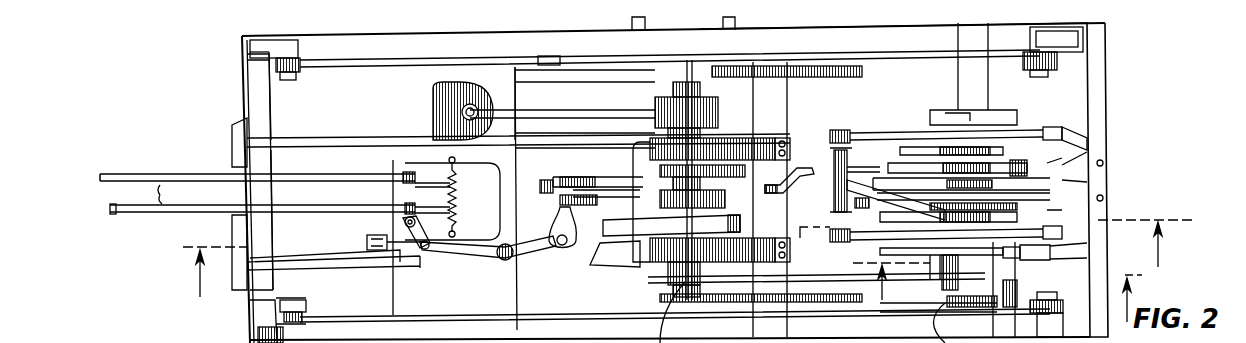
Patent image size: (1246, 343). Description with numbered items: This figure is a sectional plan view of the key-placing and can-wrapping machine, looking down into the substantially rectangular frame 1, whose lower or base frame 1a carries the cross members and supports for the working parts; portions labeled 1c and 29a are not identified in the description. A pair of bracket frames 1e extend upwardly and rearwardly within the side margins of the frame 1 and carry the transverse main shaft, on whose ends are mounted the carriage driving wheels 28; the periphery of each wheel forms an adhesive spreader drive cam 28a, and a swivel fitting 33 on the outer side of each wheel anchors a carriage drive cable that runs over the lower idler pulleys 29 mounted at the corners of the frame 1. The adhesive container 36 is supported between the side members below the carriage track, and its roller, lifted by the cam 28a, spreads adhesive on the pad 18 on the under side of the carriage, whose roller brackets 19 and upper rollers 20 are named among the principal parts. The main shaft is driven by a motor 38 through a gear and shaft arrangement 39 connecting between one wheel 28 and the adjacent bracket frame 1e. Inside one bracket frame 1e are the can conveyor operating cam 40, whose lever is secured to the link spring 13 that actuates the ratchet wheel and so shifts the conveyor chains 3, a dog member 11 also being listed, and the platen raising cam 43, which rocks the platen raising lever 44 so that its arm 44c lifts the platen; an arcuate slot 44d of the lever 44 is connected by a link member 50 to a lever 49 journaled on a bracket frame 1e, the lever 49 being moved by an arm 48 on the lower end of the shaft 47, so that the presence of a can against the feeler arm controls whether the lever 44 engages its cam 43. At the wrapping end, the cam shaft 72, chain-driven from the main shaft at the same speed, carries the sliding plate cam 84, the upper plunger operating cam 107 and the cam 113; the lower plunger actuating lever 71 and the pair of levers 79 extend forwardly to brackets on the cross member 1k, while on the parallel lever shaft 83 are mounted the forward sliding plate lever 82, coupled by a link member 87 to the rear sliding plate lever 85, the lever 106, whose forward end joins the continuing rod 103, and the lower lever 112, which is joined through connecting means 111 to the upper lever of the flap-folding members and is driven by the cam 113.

The frame 1 is at (258, 303).
The base frame 1a is at (850, 40).
The frame rail 1c is at (302, 138).
The bracket frames 1e is at (373, 258).
The cross member 1k is at (1100, 185).
The conveyor chains 3 is at (675, 249).
The dog member 11 is at (787, 114).
The link spring 13 is at (368, 240).
The pad 18 is at (275, 272).
The roller brackets 19 is at (255, 138).
The upper rollers 20 is at (1010, 292).
The carriage driving wheels 28 is at (550, 305).
The adhesive spreader drive cam 28a is at (517, 300).
The lower idler pulleys 29 is at (298, 66).
The bearing rod 29a is at (438, 187).
The swivel fitting 33 is at (546, 58).
The adhesive container 36 is at (240, 188).
The motor 38 is at (452, 198).
The gear and shaft arrangement 39 is at (596, 100).
The can conveyor operating cam 40 is at (642, 284).
The platen raising cam 43 is at (678, 198).
The platen raising lever 44 is at (620, 190).
The arm of platen raising lever 44c is at (560, 205).
The arcuate slot 44d is at (578, 192).
The shaft 47 is at (403, 230).
The arm 48 is at (418, 250).
The lever 49 is at (478, 258).
The link member 50 is at (563, 249).
The lower plunger actuating lever 71 is at (1104, 163).
The cam shaft 72 is at (930, 117).
The levers 79 is at (1020, 140).
The forward sliding plate lever 82 is at (1090, 167).
The lever shaft 83 is at (1020, 130).
The sliding plate cam 84 is at (1077, 150).
The rear sliding plate lever 85 is at (787, 183).
The link member 87 is at (862, 150).
The continuing rod 103 is at (1104, 197).
The lever 106 is at (1085, 207).
The upper plunger operating cam 107 is at (856, 203).
The connecting means 111 is at (1130, 135).
The lower lever 112 is at (1068, 132).
The cam 113 is at (962, 150).